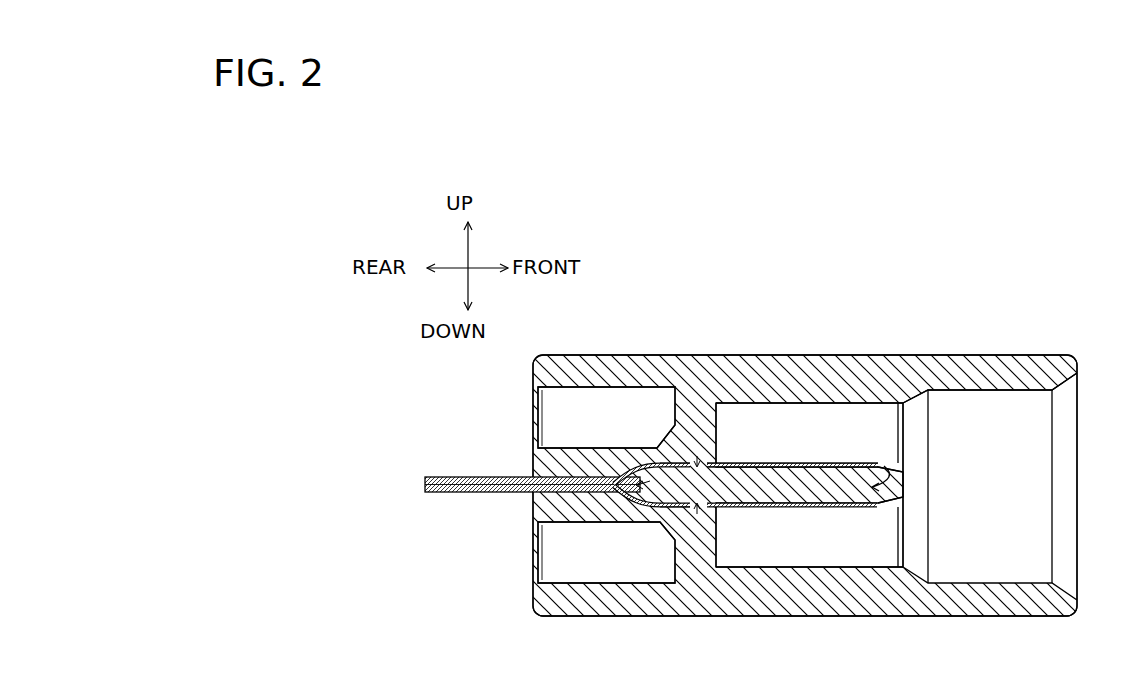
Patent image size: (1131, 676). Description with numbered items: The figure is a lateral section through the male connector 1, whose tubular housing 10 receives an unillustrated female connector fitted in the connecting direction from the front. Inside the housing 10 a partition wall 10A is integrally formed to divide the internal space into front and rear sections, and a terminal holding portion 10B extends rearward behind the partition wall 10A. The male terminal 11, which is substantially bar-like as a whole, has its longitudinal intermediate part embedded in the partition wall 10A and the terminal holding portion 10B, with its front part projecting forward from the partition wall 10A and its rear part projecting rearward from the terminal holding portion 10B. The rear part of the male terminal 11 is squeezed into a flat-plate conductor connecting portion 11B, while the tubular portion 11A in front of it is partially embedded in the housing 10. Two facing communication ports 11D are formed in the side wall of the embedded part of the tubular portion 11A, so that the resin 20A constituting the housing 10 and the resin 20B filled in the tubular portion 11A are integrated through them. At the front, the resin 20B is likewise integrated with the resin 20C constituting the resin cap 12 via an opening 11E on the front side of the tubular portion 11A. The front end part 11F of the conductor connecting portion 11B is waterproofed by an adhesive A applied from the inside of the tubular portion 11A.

The male connector 1 is at (728, 329).
The housing 10 is at (861, 355).
The partition wall 10A is at (703, 436).
The terminal holding portion 10B is at (583, 448).
The male terminal 11 is at (795, 508).
The tubular portion 11A is at (800, 463).
The conductor connecting portion 11B is at (466, 477).
The communication port 11D is at (676, 455).
The opening 11E is at (880, 463).
The front end part 11F is at (660, 512).
The resin cap 12 is at (905, 478).
The resin constituting the housing 20A is at (918, 355).
The resin filled in the tubular portion 20B is at (826, 508).
The resin constituting the resin cap 20C is at (892, 503).
The adhesive A is at (621, 497).